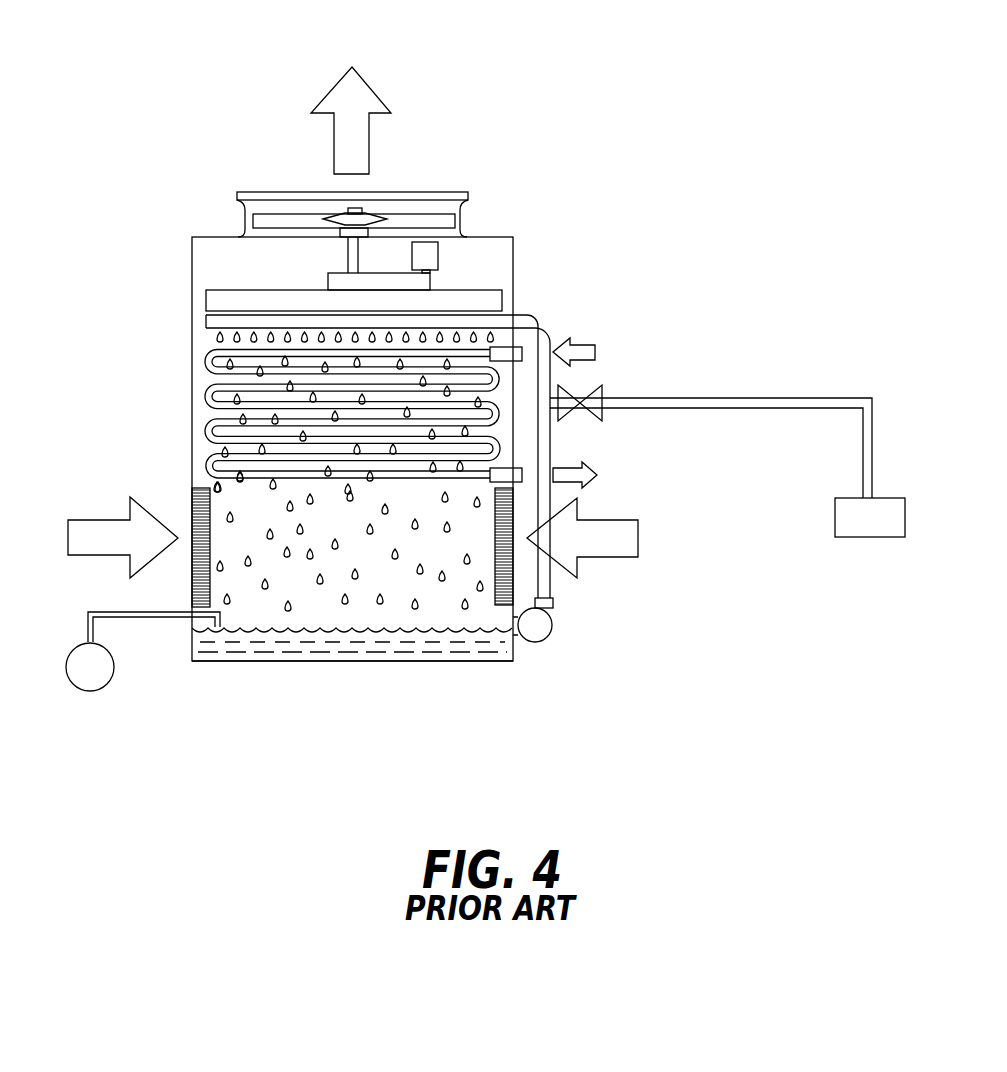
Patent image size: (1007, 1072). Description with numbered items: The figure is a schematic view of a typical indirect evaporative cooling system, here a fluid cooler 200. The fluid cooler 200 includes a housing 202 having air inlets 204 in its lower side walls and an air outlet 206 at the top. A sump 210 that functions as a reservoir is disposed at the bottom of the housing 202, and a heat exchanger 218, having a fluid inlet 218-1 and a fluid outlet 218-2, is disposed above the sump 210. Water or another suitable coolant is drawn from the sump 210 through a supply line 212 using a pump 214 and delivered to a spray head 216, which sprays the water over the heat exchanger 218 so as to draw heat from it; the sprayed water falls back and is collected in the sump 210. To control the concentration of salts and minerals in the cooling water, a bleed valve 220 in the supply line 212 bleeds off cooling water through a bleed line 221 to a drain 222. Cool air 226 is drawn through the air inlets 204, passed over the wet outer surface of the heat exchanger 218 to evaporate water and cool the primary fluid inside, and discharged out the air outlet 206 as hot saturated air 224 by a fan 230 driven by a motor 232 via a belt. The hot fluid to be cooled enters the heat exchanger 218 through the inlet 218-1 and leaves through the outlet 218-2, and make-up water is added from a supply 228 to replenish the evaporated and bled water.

The fluid cooler 200 is at (750, 144).
The housing 202 is at (192, 264).
The air inlets 204 is at (192, 578).
The air outlet 206 is at (433, 192).
The sump 210 is at (222, 663).
The supply line 212 is at (552, 587).
The pump 214 is at (553, 630).
The spray head 216 is at (206, 318).
The heat exchanger 218 is at (205, 387).
The fluid inlet 218-1 is at (513, 349).
The fluid outlet 218-2 is at (518, 468).
The bleed valve 220 is at (599, 392).
The bleed line 221 is at (834, 397).
The drain 222 is at (851, 540).
The discharge air arrow 224 is at (383, 97).
The cool air 226 is at (106, 512).
The make-up water supply 228 is at (147, 619).
The fan 230 is at (263, 210).
The motor 232 is at (438, 263).